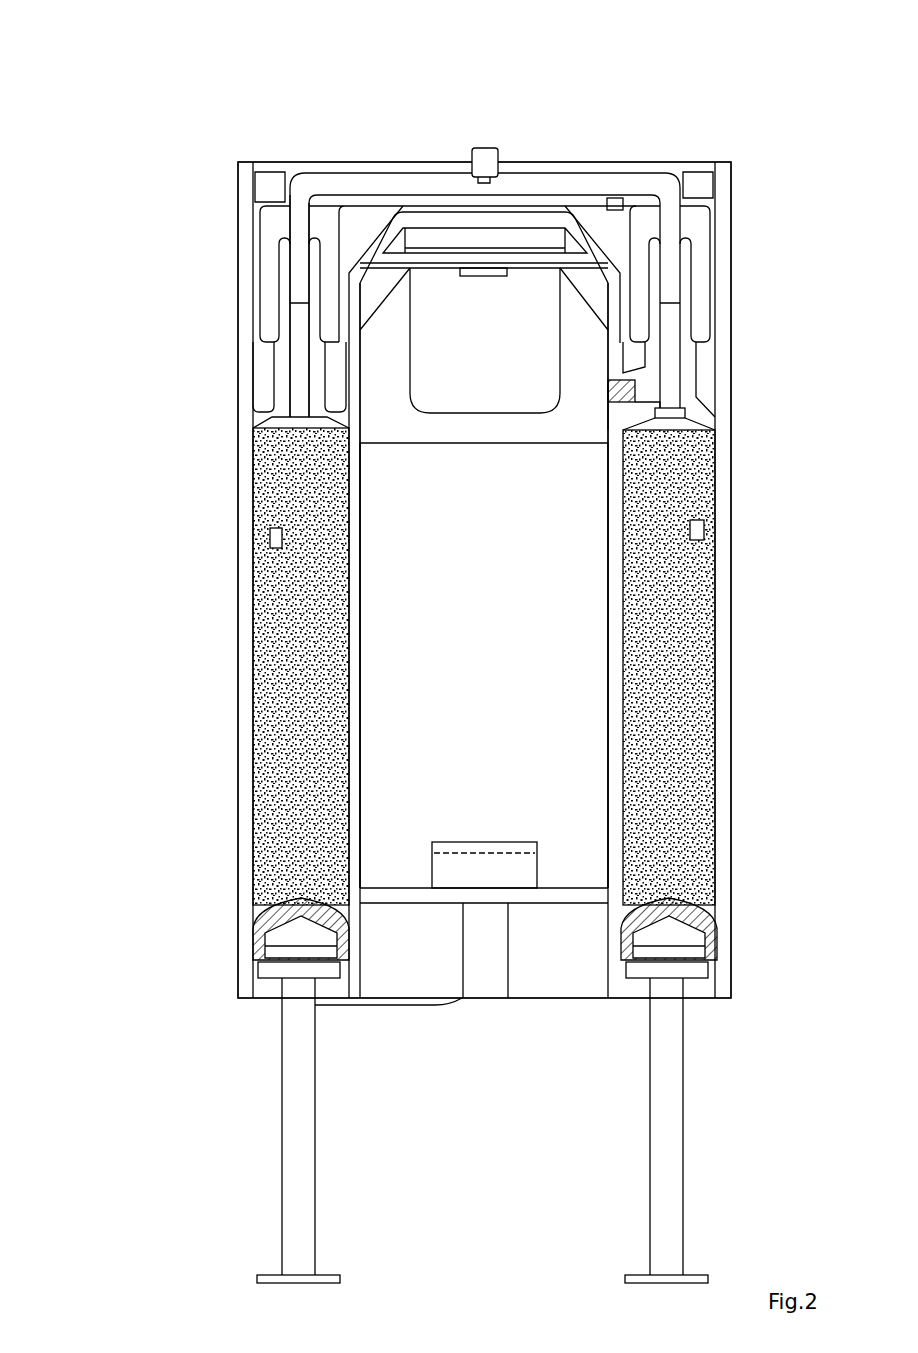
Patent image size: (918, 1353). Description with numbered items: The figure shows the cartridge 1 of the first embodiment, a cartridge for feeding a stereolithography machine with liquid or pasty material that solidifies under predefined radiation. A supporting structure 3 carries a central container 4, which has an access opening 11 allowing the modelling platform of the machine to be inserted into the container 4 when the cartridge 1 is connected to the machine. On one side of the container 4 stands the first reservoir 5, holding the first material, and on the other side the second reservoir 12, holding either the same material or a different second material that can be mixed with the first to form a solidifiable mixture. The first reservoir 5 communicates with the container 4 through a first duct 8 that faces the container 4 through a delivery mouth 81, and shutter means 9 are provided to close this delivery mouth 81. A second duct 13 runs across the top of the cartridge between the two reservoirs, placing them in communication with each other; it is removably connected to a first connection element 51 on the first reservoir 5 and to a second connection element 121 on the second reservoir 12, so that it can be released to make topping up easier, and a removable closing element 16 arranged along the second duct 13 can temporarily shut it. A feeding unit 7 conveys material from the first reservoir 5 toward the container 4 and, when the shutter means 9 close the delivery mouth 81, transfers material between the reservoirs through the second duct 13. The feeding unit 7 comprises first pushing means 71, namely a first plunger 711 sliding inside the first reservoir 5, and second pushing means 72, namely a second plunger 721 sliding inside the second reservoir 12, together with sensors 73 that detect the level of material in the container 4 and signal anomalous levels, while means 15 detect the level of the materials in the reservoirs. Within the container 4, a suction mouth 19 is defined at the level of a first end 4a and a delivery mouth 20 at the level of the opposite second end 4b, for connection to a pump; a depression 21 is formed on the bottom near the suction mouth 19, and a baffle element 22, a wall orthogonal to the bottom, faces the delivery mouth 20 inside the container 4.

The cartridge 1 is at (133, 76).
The supporting structure 3 is at (746, 240).
The container 4 is at (484, 624).
The first end of the container 4a is at (385, 322).
The second end of the container 4b is at (400, 868).
The first reservoir 5 is at (733, 625).
The feeding unit 7 is at (481, 1077).
The first duct 8 is at (644, 390).
The shutter means 9 is at (601, 393).
The access opening 11 is at (585, 728).
The second reservoir 12 is at (250, 633).
The second duct 13 is at (410, 183).
The means for detecting the level of the materials 15 is at (279, 540).
The removable closing element 16 is at (489, 130).
The suction mouth 19 is at (484, 277).
The delivery mouth 20 is at (485, 903).
The depression 21 is at (484, 393).
The baffle element 22 is at (488, 826).
The first connection element 51 is at (672, 415).
The first pushing means 71 is at (722, 904).
The second pushing means 72 is at (260, 940).
The sensors 73 is at (616, 197).
The delivery mouth of the first duct 81 is at (606, 409).
The second connection element 121 is at (300, 383).
The first plunger 711 is at (707, 944).
The second plunger 721 is at (258, 915).